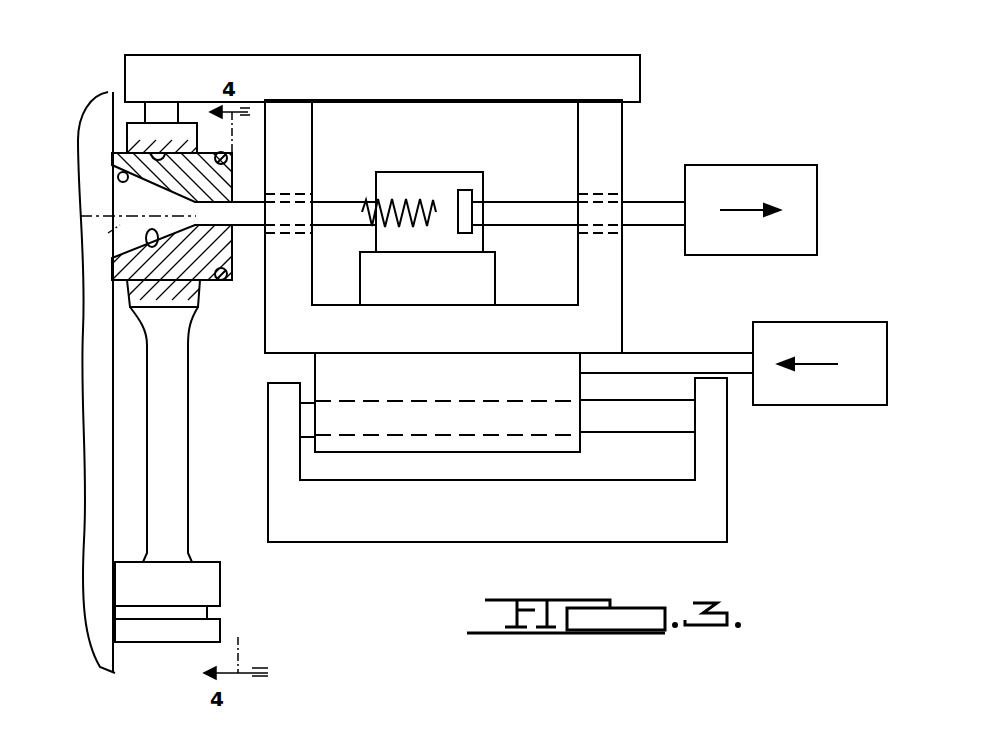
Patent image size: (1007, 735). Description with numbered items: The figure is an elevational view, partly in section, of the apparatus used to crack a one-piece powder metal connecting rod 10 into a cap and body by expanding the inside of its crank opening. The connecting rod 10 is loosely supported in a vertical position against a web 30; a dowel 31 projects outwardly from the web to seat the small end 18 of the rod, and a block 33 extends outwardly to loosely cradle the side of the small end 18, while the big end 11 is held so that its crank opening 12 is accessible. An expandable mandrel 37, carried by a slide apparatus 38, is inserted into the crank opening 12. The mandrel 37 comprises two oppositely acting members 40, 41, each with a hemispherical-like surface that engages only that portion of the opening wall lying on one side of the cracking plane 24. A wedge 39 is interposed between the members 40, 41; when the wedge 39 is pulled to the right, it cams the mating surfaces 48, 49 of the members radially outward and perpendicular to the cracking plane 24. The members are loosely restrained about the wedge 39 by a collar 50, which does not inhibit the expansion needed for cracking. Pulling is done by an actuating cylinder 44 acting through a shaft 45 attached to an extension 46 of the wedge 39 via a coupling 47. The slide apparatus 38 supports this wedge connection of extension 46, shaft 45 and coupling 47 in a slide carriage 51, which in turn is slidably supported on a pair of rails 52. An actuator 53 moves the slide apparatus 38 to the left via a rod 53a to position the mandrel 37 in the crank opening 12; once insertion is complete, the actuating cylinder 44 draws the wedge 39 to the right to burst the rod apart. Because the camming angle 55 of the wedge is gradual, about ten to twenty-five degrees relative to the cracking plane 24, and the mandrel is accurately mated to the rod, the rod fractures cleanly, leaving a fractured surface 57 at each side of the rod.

The connecting rod 10 is at (208, 407).
The big end 11 is at (222, 136).
The crank opening 12 is at (168, 153).
The small end 18 is at (128, 615).
The cracking plane 24 is at (113, 236).
The web 30 is at (103, 447).
The dowel 31 is at (167, 635).
The block 33 is at (210, 580).
The expandable mandrel 37 is at (250, 272).
The slide apparatus 38 is at (640, 298).
The wedge 39 is at (180, 218).
The oppositely acting member 40 is at (203, 178).
The oppositely acting member 41 is at (222, 252).
The actuating cylinder 44 is at (790, 172).
The shaft 45 is at (646, 200).
The extension 46 is at (338, 203).
The coupling 47 is at (455, 171).
The mating surface 48 is at (127, 178).
The mating surface 49 is at (158, 248).
The collar 50 is at (223, 282).
The slide carriage 51 is at (480, 333).
The rails 52 is at (638, 425).
The actuator 53 is at (808, 400).
The rod 53a is at (697, 360).
The camming angle 55 is at (90, 165).
The fractured surface 57 is at (157, 138).